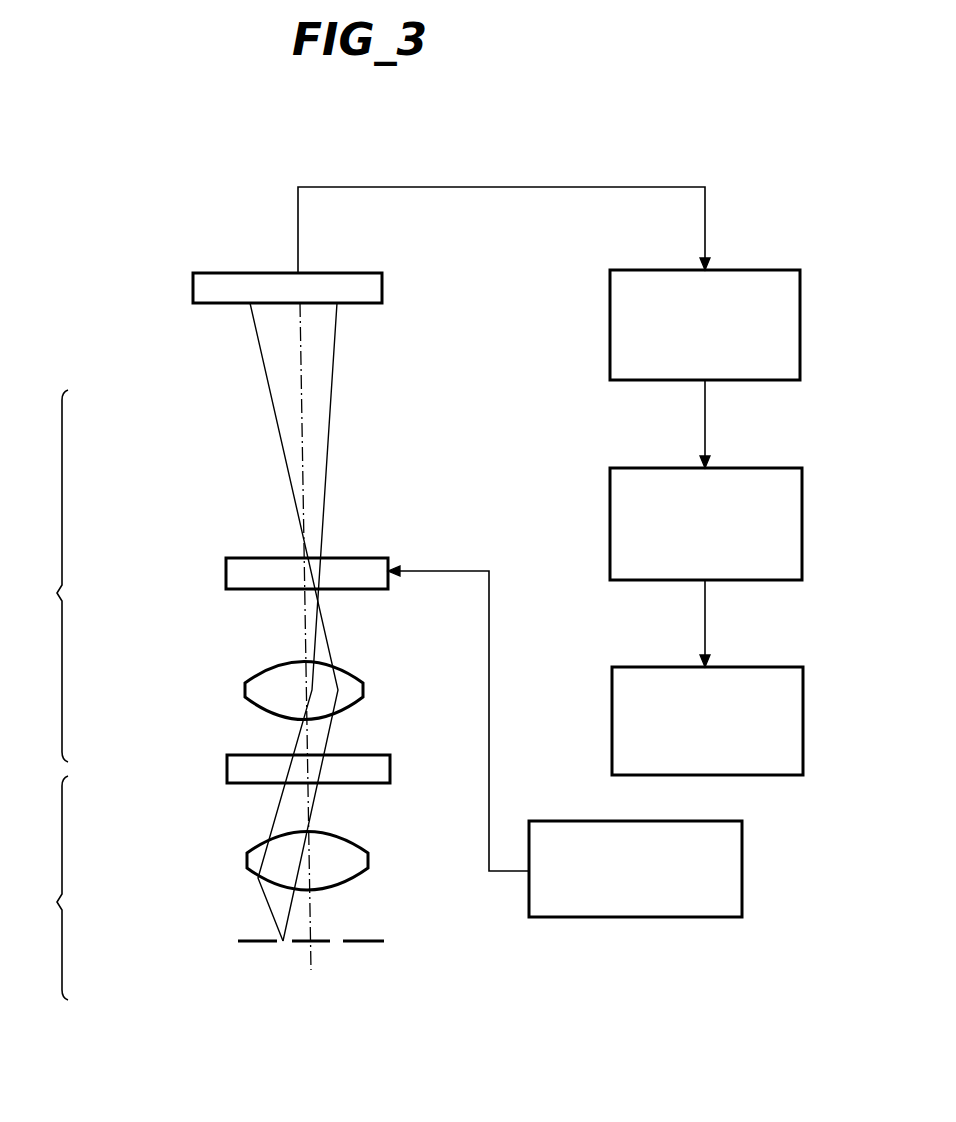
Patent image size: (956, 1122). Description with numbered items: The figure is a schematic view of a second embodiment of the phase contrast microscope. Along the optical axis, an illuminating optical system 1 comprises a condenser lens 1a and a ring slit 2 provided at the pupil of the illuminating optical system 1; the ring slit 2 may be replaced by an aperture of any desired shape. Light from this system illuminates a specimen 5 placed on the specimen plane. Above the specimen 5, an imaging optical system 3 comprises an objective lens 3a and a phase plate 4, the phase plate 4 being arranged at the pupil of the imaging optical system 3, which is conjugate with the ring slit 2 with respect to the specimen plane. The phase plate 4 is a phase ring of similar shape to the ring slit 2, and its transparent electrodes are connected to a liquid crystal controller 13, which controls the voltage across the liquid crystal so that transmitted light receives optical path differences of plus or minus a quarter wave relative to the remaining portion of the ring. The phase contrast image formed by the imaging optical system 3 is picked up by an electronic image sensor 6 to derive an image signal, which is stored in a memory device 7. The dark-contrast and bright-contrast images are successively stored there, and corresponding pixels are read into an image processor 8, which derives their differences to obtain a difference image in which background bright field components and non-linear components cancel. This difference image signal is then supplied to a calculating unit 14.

The illuminating optical system 1 is at (53, 888).
The condenser lens 1a is at (247, 860).
The ring slit 2 is at (365, 941).
The imaging optical system 3 is at (50, 576).
The objective lens 3a is at (248, 688).
The phase plate 4 is at (226, 566).
The specimen 5 is at (227, 768).
The electronic image sensor 6 is at (383, 287).
The memory device 7 is at (802, 322).
The image processor 8 is at (803, 518).
The liquid crystal controller 13 is at (745, 866).
The calculating unit 14 is at (805, 715).